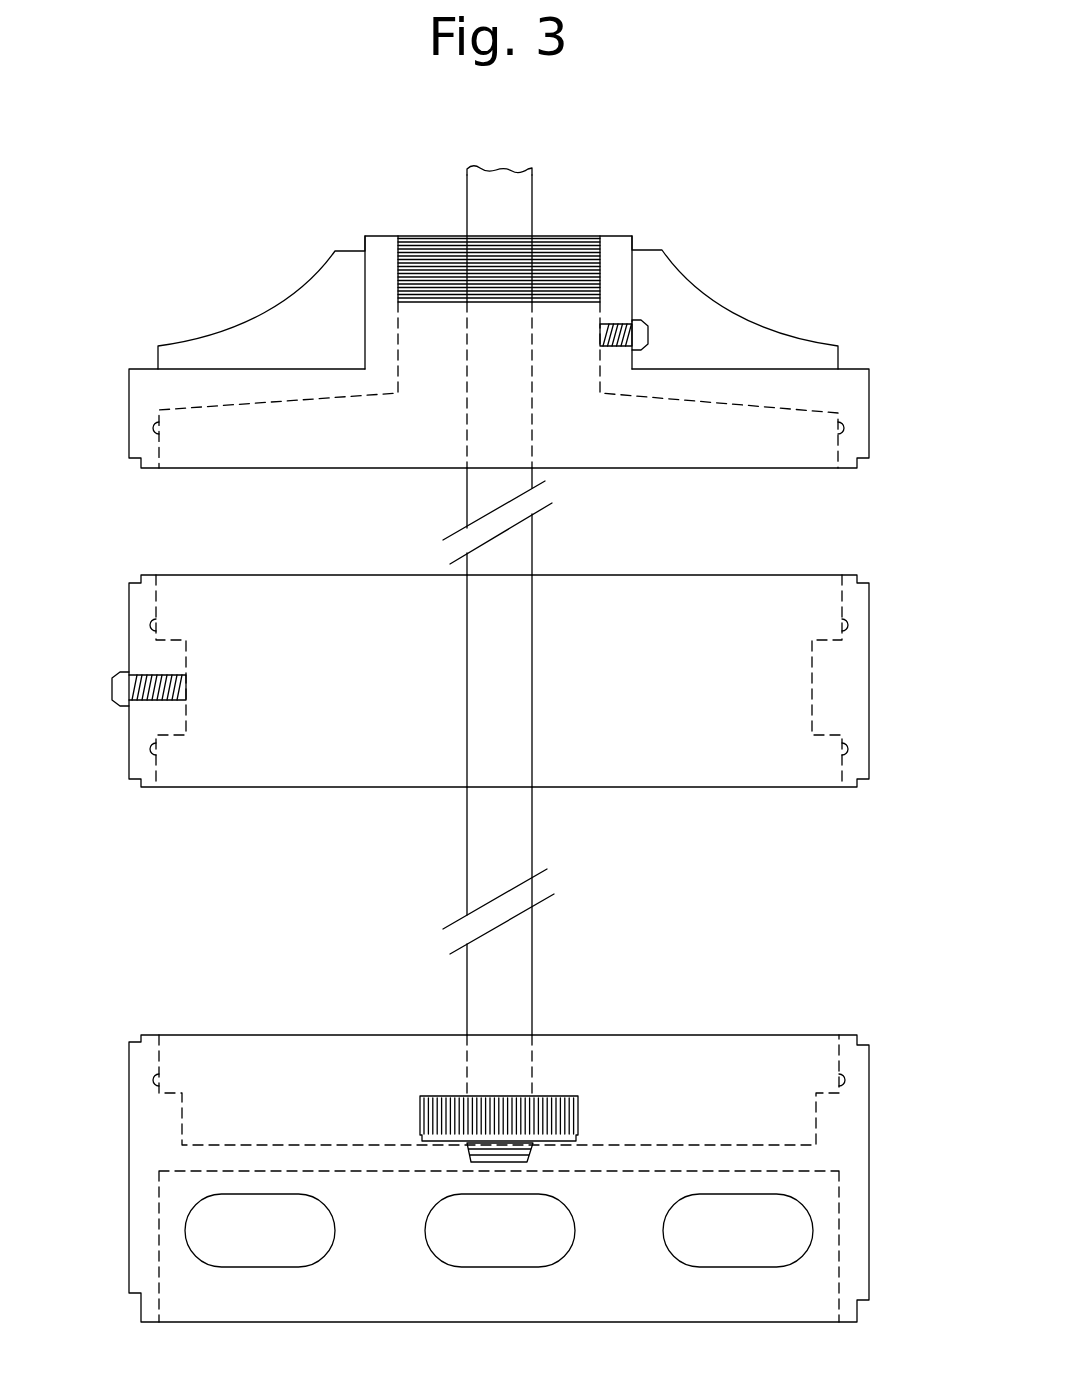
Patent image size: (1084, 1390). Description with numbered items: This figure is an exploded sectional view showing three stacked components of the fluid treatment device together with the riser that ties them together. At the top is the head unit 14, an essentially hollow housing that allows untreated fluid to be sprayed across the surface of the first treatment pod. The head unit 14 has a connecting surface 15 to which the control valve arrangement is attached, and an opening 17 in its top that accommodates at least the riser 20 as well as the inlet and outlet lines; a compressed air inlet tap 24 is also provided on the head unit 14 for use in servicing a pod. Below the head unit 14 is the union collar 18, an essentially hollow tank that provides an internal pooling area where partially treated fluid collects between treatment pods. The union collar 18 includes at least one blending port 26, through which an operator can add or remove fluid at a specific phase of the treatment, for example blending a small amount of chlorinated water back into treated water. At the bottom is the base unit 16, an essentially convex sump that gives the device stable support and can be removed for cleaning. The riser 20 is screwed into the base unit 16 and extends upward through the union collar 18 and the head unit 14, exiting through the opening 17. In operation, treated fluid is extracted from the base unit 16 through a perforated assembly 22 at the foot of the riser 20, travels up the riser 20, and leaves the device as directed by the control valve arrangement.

The head unit 14 is at (857, 412).
The connecting surface 15 is at (556, 262).
The base unit 16 is at (853, 1157).
The opening 17 is at (435, 214).
The union collar 18 is at (853, 684).
The riser 20 is at (520, 545).
The perforated assembly 22 is at (563, 1120).
The compressed air inlet tap 24 is at (646, 333).
The blending port 26 is at (122, 688).